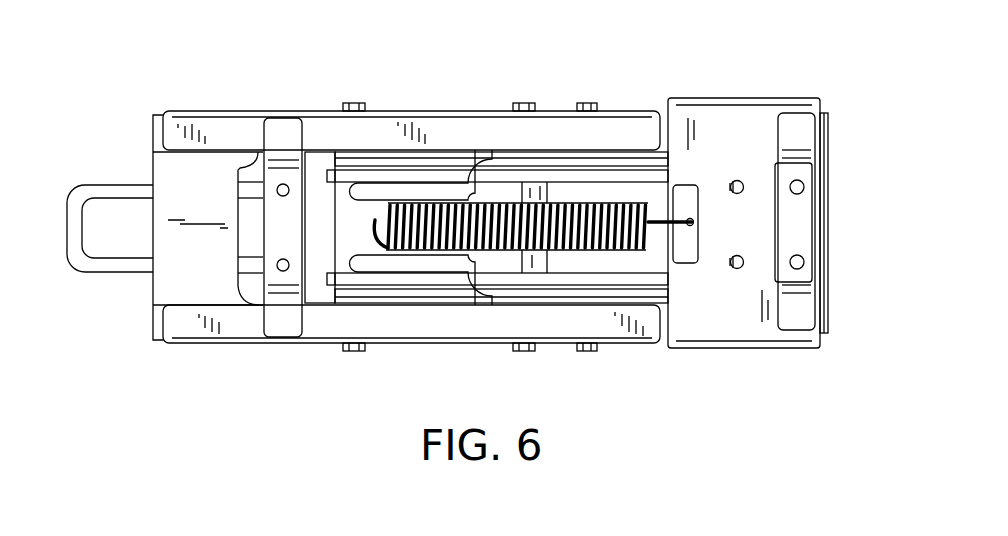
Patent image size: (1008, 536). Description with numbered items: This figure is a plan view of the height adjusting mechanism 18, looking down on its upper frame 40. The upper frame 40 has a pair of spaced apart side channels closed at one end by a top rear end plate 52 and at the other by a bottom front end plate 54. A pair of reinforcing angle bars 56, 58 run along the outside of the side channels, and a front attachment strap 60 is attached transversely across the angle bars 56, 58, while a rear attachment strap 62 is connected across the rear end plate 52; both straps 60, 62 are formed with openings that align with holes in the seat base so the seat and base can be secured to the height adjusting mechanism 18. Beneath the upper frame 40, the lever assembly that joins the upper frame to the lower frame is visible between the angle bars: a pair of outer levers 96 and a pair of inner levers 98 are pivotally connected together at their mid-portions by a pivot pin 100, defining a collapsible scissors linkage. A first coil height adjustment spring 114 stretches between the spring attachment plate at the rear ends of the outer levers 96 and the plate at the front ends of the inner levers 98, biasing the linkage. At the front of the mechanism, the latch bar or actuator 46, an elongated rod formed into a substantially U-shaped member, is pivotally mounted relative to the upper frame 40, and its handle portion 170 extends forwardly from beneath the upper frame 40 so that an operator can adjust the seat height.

The height adjusting mechanism 18 is at (465, 92).
The upper frame 40 is at (375, 109).
The latch bar or actuator 46 is at (125, 185).
The top rear end plate 52 is at (735, 113).
The bottom front end plate 54 is at (220, 160).
The reinforcing angle bar 56 is at (423, 125).
The reinforcing angle bar 58 is at (457, 325).
The front attachment strap 60 is at (282, 128).
The rear attachment strap 62 is at (798, 222).
The outer lever 96 is at (609, 158).
The inner lever 98 is at (585, 163).
The pivot pin 100 is at (534, 185).
The first coil height adjustment spring 114 is at (625, 200).
The handle portion 170 is at (90, 268).